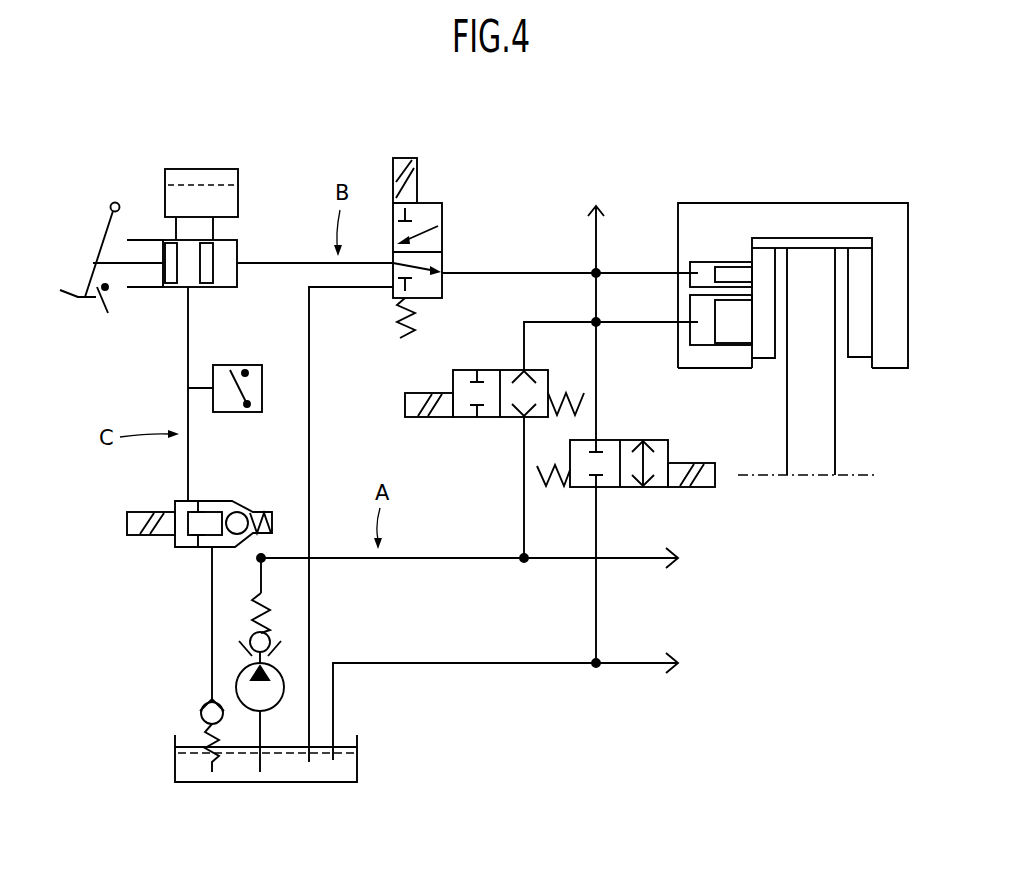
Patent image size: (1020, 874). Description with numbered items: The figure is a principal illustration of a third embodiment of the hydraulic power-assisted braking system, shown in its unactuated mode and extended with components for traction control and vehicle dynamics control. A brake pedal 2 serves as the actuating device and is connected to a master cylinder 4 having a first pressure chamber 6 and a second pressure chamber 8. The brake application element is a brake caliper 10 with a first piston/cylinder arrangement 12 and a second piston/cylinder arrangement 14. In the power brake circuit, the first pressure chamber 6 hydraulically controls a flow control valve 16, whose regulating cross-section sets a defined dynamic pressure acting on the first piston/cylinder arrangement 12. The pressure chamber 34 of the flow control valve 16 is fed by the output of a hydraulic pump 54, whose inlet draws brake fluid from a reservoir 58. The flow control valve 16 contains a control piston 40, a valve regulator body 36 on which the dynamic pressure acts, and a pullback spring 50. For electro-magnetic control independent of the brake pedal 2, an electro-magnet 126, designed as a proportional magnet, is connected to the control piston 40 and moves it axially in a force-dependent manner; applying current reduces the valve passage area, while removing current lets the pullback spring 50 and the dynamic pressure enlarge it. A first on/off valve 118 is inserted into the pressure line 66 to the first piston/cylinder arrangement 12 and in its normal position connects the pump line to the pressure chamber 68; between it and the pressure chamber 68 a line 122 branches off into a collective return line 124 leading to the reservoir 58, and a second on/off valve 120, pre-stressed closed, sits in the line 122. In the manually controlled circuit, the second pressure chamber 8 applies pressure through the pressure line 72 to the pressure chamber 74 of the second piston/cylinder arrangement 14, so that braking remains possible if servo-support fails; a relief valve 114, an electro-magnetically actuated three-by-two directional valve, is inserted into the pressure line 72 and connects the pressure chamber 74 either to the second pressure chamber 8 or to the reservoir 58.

The brake pedal 2 is at (101, 236).
The master cylinder 4 is at (185, 258).
The first pressure chamber 6 is at (187, 275).
The second pressure chamber 8 is at (228, 272).
The brake caliper 10 is at (769, 313).
The first piston/cylinder arrangement 12 is at (735, 348).
The second piston/cylinder arrangement 14 is at (722, 247).
The flow control valve 16 is at (248, 529).
The pressure chamber 34 is at (270, 540).
The valve regulator body 36 is at (238, 548).
The control piston 40 is at (210, 512).
The pullback spring 50 is at (255, 512).
The hydraulic pump 54 is at (240, 690).
The reservoir 58 is at (350, 765).
The pressure line 66 is at (446, 555).
The pressure chamber 68 is at (703, 335).
The pressure line 72 is at (514, 270).
The pressure chamber 74 is at (705, 268).
The relief valve 114 is at (440, 197).
The first on/off valve 118 is at (473, 422).
The second on/off valve 120 is at (652, 495).
The line 122 is at (599, 363).
The collective return line 124 is at (478, 666).
The electro-magnet 126 is at (135, 527).